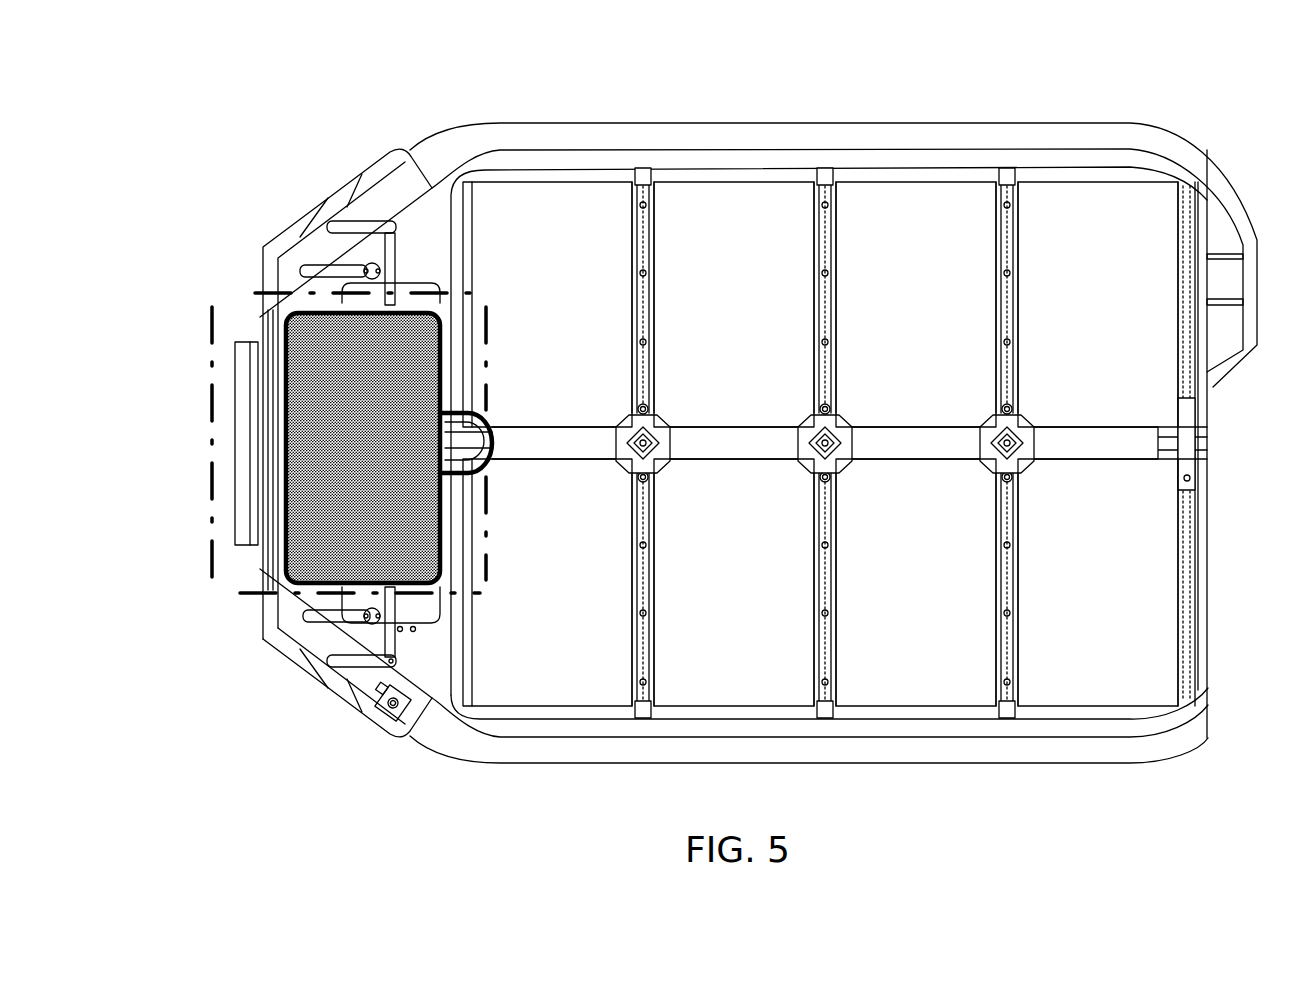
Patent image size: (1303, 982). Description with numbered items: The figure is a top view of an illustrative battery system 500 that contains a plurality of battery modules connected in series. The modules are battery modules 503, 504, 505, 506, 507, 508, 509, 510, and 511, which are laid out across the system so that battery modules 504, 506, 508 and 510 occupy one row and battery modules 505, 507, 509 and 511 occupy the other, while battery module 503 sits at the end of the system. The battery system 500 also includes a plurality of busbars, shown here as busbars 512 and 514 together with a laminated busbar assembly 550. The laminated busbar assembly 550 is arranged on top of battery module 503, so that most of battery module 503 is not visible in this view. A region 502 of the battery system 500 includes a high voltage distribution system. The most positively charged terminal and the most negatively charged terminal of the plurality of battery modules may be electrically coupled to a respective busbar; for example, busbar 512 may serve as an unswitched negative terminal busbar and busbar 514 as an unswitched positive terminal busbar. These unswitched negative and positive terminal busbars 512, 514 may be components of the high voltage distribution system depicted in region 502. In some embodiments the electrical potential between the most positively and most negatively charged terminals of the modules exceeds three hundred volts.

The battery system 500 is at (792, 34).
The region 502 is at (232, 283).
The battery module 503 is at (302, 418).
The battery module 504 is at (530, 287).
The battery module 505 is at (530, 588).
The battery module 506 is at (710, 287).
The battery module 507 is at (710, 588).
The battery module 508 is at (892, 287).
The battery module 509 is at (892, 588).
The battery module 510 is at (1072, 293).
The battery module 511 is at (1072, 593).
The busbar 512 is at (486, 450).
The busbar 514 is at (462, 438).
The laminated busbar assembly 550 is at (378, 459).